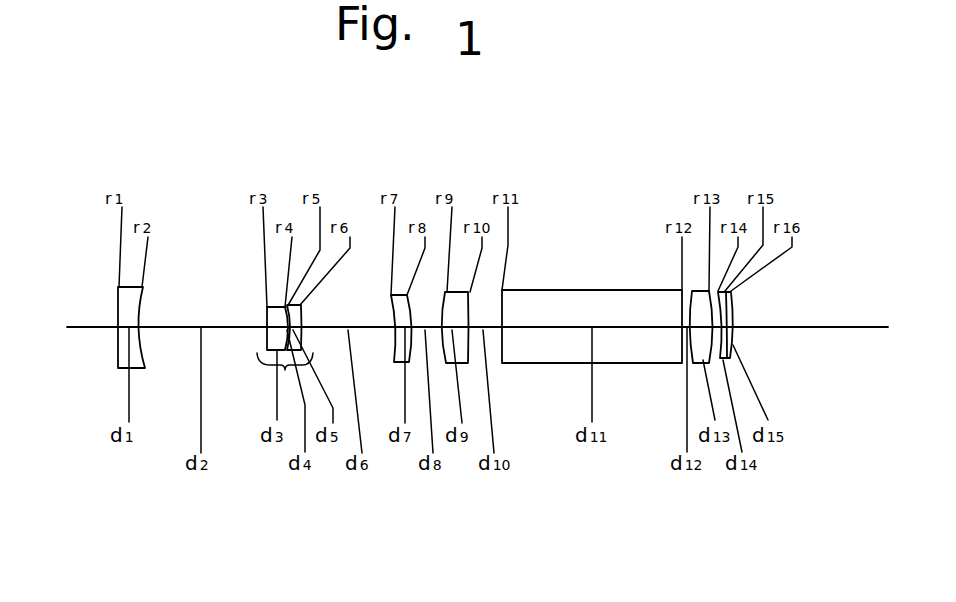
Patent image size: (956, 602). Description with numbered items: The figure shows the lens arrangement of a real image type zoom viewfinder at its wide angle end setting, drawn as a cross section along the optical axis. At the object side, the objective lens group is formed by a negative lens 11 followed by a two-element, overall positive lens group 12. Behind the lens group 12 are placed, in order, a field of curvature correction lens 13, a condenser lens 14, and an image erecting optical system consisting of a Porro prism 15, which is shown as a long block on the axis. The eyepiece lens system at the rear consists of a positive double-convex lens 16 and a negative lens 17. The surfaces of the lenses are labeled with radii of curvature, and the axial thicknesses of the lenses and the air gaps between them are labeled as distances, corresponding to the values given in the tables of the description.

The negative lens 11 is at (125, 305).
The two-element positive lens group 12 is at (285, 369).
The field of curvature correction lens 13 is at (395, 360).
The condenser lens 14 is at (463, 363).
The Porro prism 15 is at (551, 357).
The positive double-convex lens 16 is at (700, 303).
The negative lens 17 is at (733, 305).